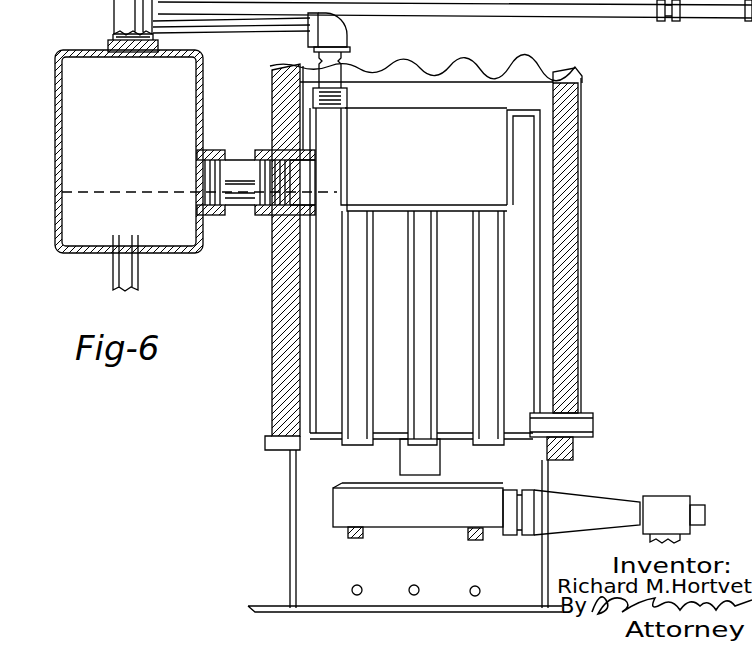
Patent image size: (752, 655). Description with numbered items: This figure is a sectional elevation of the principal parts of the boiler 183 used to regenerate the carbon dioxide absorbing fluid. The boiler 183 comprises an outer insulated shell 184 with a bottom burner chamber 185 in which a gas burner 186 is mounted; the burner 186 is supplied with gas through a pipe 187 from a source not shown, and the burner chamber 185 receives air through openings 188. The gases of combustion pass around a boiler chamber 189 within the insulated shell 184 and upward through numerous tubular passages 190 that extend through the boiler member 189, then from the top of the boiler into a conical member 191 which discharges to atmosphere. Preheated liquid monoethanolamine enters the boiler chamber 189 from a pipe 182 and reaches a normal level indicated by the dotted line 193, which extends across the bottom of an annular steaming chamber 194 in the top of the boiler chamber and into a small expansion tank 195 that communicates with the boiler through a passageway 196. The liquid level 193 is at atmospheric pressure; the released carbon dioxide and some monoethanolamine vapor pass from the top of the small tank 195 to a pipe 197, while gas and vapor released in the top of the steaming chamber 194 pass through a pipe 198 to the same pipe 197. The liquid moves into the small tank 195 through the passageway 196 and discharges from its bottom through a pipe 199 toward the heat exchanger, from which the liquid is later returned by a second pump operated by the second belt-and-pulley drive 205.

The pipe 182 is at (585, 416).
The boiler 183 is at (353, 371).
The outer insulated shell 184 is at (562, 248).
The bottom burner chamber 185 is at (305, 502).
The gas burner 186 is at (465, 519).
The pipe 187 is at (690, 538).
The openings 188 is at (410, 588).
The boiler chamber 189 is at (535, 292).
The tubular passages 190 is at (420, 383).
The conical member 191 is at (583, 78).
The dotted line 193 is at (105, 188).
The annular steaming chamber 194 is at (523, 110).
The small expansion tank 195 is at (55, 176).
The passageway 196 is at (237, 163).
The pipe 197 is at (112, 22).
The pipe 198 is at (199, 19).
The pipe 199 is at (140, 284).
The second belt-and-pulley drive 205 is at (442, 0).